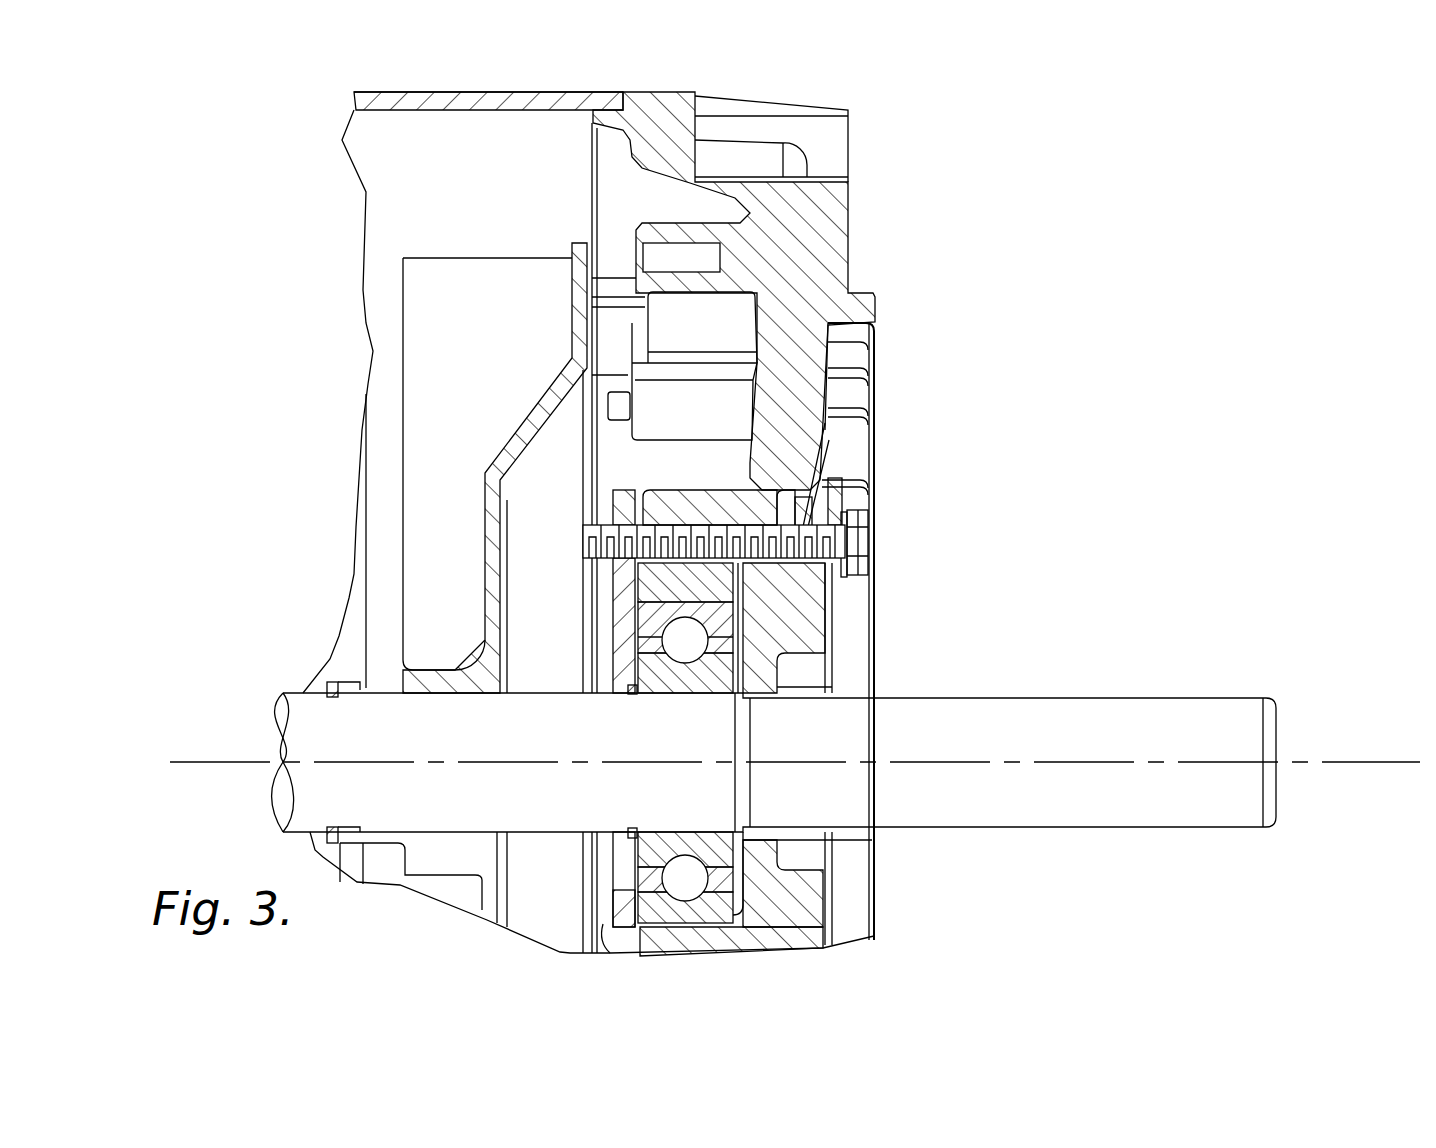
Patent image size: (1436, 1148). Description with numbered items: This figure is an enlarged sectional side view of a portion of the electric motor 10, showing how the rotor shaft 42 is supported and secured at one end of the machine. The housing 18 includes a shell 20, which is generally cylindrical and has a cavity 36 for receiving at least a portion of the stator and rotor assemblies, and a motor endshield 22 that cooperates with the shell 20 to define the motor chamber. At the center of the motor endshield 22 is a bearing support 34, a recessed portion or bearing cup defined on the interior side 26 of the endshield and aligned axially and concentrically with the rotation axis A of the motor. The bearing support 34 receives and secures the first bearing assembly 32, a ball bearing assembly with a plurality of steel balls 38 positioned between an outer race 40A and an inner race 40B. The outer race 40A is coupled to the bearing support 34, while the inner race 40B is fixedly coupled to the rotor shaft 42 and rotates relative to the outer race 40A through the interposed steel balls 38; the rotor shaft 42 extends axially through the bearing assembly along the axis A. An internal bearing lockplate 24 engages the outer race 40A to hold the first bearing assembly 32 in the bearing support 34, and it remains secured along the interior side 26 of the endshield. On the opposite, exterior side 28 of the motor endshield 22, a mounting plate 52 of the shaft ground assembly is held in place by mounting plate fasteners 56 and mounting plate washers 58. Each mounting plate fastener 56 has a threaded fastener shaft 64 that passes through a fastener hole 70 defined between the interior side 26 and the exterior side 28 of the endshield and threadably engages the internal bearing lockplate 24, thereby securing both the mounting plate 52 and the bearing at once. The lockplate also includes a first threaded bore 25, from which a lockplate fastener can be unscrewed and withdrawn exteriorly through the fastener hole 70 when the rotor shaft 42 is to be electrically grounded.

The electric motor 10 is at (866, 77).
The housing 18 is at (444, 86).
The shell 20 is at (543, 93).
The motor endshield 22 is at (850, 200).
The internal bearing lockplate 24 is at (622, 510).
The first threaded bore 25 is at (630, 576).
The interior side 26 is at (638, 486).
The exterior side 28 is at (836, 363).
The first bearing assembly 32 is at (746, 617).
The bearing support 34 is at (749, 878).
The cavity 36 is at (404, 163).
The steel balls 38 is at (672, 655).
The outer race 40A is at (652, 617).
The inner race 40B is at (668, 684).
The rotor shaft 42 is at (1160, 694).
The mounting plate 52 is at (819, 463).
The mounting plate fasteners 56 is at (869, 532).
The mounting plate washers 58 is at (836, 495).
The threaded fastener shaft 64 is at (752, 523).
The fastener hole 70 is at (720, 537).
The rotation axis A is at (1343, 762).